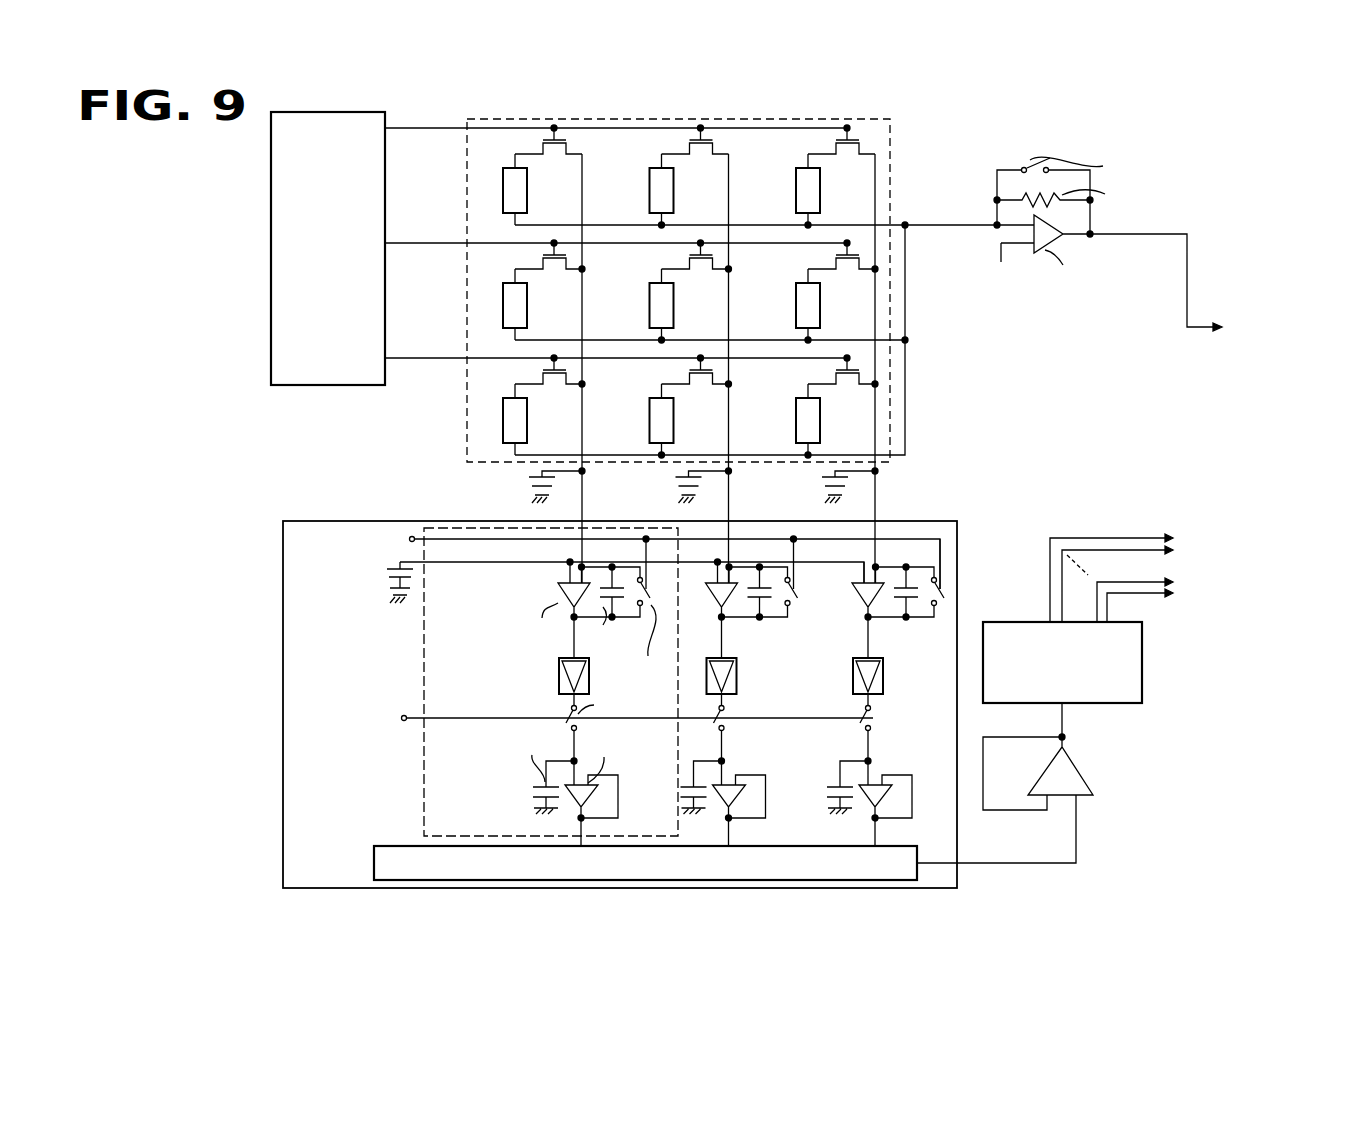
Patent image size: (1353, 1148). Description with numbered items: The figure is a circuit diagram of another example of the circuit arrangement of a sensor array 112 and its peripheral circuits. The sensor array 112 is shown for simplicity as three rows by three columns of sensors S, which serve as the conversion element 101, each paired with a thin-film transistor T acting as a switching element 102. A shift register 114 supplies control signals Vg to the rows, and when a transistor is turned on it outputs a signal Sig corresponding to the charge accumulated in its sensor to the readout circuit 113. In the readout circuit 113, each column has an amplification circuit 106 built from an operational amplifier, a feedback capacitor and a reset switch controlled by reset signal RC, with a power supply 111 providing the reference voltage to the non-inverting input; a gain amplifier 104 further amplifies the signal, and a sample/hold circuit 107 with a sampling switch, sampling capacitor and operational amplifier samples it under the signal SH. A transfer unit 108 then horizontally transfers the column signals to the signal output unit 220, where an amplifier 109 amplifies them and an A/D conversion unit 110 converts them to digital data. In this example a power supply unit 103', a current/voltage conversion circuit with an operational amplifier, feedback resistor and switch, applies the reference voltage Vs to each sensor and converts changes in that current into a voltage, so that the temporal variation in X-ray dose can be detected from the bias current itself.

The conversion element 101 is at (750, 351).
The switching element 102 is at (820, 202).
The power supply unit 103' is at (1144, 243).
The gain amplifier 104 is at (560, 676).
The amplification circuit 106 is at (492, 553).
The sample/hold circuit 107 is at (492, 698).
The transfer unit 108 is at (374, 852).
The amplifier 109 is at (1079, 770).
The A/D conversion unit 110 is at (1143, 654).
The power supply 111 is at (386, 568).
The sensor array 112 is at (892, 168).
The readout circuit 113 is at (641, 704).
The shift register 114 is at (271, 150).
The signal output unit 220 is at (1210, 633).